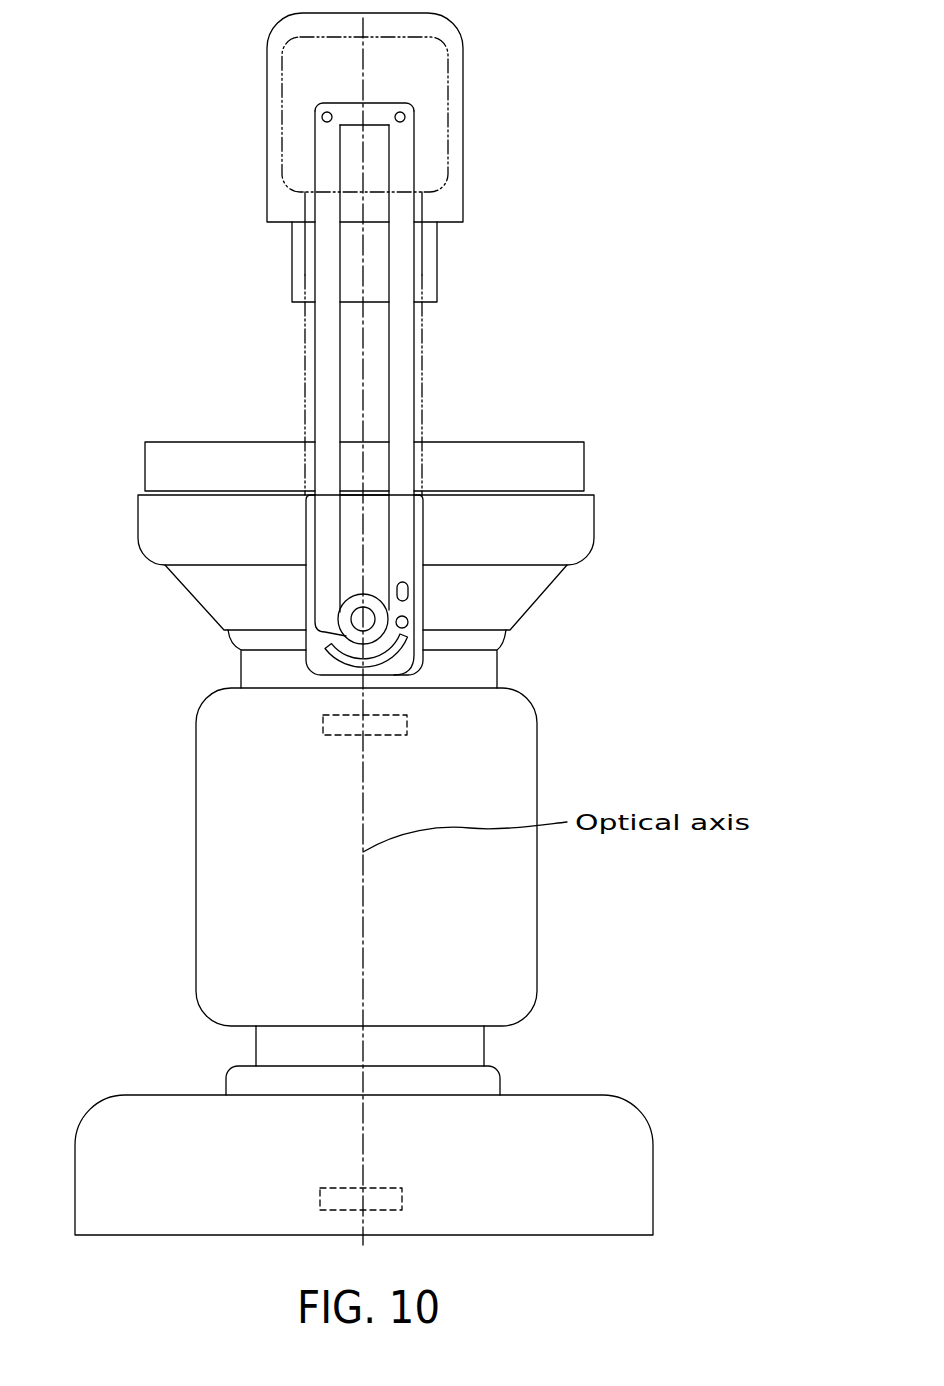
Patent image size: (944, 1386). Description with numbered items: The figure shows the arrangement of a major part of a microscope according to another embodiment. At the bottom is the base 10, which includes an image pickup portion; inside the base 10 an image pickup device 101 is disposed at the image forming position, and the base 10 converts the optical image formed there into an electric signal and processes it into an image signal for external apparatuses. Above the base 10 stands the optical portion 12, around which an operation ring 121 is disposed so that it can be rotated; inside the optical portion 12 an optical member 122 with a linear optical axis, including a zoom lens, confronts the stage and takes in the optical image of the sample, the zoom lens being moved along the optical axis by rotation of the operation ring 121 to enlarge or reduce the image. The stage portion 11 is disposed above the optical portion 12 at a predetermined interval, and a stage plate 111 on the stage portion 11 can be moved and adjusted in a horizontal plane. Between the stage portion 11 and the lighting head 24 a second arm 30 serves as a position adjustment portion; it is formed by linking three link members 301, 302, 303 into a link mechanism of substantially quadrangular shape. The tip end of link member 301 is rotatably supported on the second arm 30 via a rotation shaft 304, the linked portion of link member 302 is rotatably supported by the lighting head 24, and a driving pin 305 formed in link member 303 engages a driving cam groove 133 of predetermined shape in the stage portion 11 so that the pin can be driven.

The base 10 is at (648, 1108).
The image pickup device 101 is at (403, 1197).
The stage portion 11 is at (608, 513).
The stage plate 111 is at (587, 467).
The optical portion 12 is at (510, 668).
The operation ring 121 is at (537, 903).
The optical member 122 is at (408, 725).
The driving cam groove 133 is at (330, 658).
The lighting head 24 is at (475, 92).
The second arm 30 is at (423, 412).
The link member 301 is at (320, 368).
The link member 302 is at (384, 103).
The link member 303 is at (405, 372).
The rotation shaft 304 is at (351, 620).
The driving pin 305 is at (410, 618).